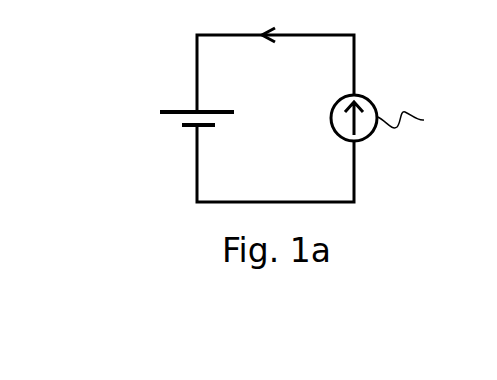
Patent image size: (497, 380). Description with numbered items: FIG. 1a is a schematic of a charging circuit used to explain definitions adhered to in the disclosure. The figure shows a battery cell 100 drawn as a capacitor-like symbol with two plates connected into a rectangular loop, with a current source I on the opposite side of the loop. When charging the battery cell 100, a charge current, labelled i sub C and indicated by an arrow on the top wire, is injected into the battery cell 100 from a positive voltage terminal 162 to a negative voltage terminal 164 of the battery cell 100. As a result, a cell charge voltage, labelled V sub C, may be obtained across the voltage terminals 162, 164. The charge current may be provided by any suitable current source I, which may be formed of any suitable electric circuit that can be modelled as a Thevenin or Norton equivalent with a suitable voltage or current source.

The battery cell 100 is at (235, 102).
The positive voltage terminal 162 is at (192, 110).
The negative voltage terminal 164 is at (192, 127).